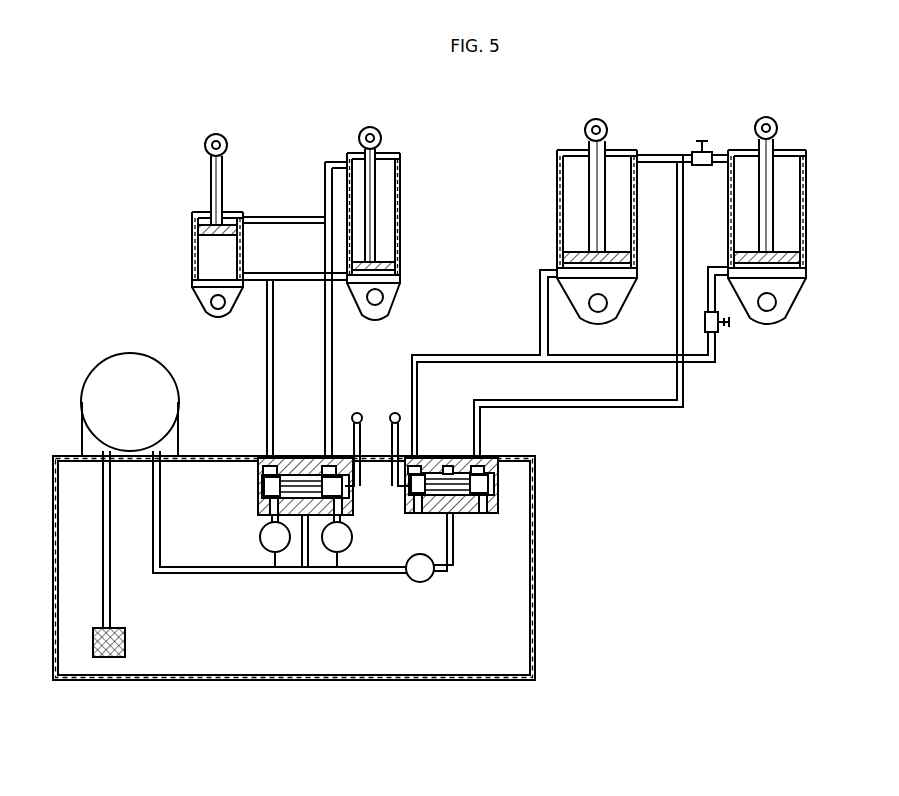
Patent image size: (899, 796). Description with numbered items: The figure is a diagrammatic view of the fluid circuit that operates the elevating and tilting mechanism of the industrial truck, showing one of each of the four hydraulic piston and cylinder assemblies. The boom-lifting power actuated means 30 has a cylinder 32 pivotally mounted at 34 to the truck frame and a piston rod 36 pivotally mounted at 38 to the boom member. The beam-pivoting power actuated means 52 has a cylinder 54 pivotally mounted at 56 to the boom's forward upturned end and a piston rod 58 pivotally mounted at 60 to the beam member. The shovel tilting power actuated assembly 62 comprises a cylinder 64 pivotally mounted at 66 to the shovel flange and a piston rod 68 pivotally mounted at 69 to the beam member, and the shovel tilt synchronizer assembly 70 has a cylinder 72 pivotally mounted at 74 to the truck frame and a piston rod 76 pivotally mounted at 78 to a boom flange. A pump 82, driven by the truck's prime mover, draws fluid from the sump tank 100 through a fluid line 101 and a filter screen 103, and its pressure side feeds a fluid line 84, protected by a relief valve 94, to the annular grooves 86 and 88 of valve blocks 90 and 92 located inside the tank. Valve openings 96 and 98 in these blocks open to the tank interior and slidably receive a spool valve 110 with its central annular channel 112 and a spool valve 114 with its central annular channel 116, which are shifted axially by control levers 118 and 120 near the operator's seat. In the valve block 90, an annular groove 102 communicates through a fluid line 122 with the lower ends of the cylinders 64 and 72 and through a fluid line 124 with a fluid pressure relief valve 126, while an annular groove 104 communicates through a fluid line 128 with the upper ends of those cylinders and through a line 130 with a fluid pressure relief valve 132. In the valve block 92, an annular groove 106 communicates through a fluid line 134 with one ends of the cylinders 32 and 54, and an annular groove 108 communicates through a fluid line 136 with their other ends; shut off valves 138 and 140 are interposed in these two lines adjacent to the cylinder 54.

The power actuated means 30 is at (575, 208).
The cylinder 32 is at (557, 232).
The pivotal mounting 34 is at (606, 309).
The piston rod 36 is at (612, 150).
The pivotal mounting 38 is at (599, 119).
The power actuated means 52 is at (797, 204).
The cylinder 54 is at (806, 233).
The pivotal mounting 56 is at (775, 307).
The piston rod 58 is at (778, 152).
The pivotal mounting 60 is at (770, 118).
The power actuated assembly 62 is at (381, 216).
The cylinder 64 is at (400, 237).
The pivotal mounting 66 is at (383, 303).
The piston rod 68 is at (364, 172).
The pivotal mounting 69 is at (366, 129).
The shovel tilt synchronizer assembly 70 is at (189, 222).
The cylinder 72 is at (192, 265).
The pivotal mounting 74 is at (217, 309).
The piston rod 76 is at (210, 175).
The pivotal mounting 78 is at (217, 134).
The pump 82 is at (98, 380).
The fluid line 84 is at (160, 503).
The annular groove 86 is at (296, 467).
The annular groove 88 is at (491, 477).
The valve block 90 is at (320, 458).
The valve block 92 is at (464, 458).
The relief valve 94 is at (432, 578).
The valve opening 96 is at (262, 483).
The valve opening 98 is at (500, 490).
The sump tank 100 is at (537, 590).
The fluid line 101 is at (103, 520).
The annular groove 102 is at (262, 462).
The filter screen 103 is at (126, 648).
The annular groove 104 is at (346, 508).
The annular groove 106 is at (418, 514).
The annular groove 108 is at (496, 458).
The spool valve 110 is at (266, 499).
The central annular channel 112 is at (304, 567).
The spool valve 114 is at (490, 514).
The central annular channel 116 is at (462, 514).
The control lever 118 is at (357, 413).
The control lever 120 is at (395, 413).
The fluid line 122 is at (274, 324).
The fluid line 124 is at (261, 533).
The fluid pressure relief valve 126 is at (270, 553).
The fluid line 128 is at (325, 360).
The line 130 is at (352, 533).
The fluid pressure relief valve 132 is at (340, 553).
The fluid line 134 is at (490, 355).
The fluid line 136 is at (652, 407).
The shut off valve 138 is at (719, 326).
The shut off valve 140 is at (702, 140).